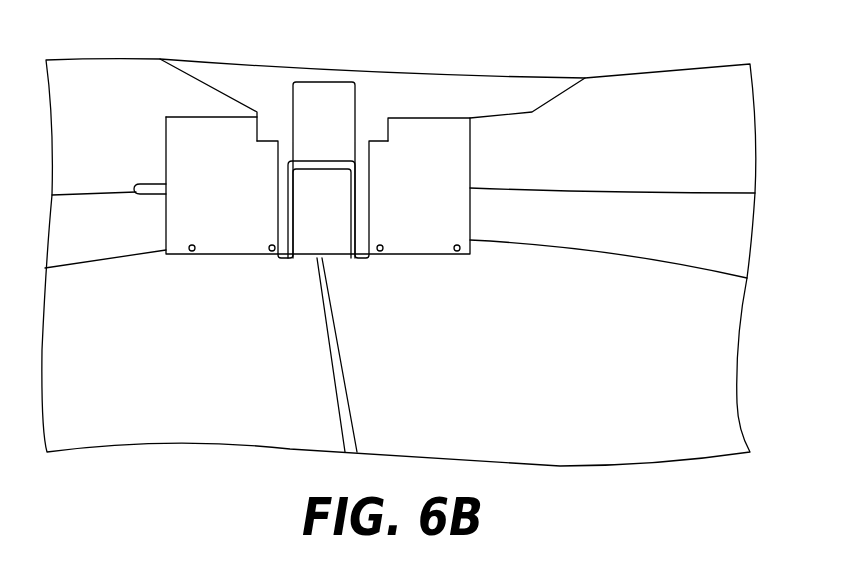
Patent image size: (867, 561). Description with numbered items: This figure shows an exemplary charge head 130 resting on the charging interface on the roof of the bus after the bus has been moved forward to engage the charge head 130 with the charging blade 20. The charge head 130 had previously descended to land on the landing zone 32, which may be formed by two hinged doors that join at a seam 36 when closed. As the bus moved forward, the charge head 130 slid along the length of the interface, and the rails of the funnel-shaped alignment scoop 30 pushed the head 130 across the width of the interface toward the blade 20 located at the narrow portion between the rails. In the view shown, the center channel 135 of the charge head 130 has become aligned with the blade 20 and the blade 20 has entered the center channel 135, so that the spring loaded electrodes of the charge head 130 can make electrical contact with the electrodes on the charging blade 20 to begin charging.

The charging blade 20 is at (313, 237).
The alignment scoop 30 is at (614, 237).
The landing zone 32 is at (382, 407).
The seam 36 is at (335, 342).
The charge head 130 is at (420, 240).
The center channel 135 is at (337, 166).